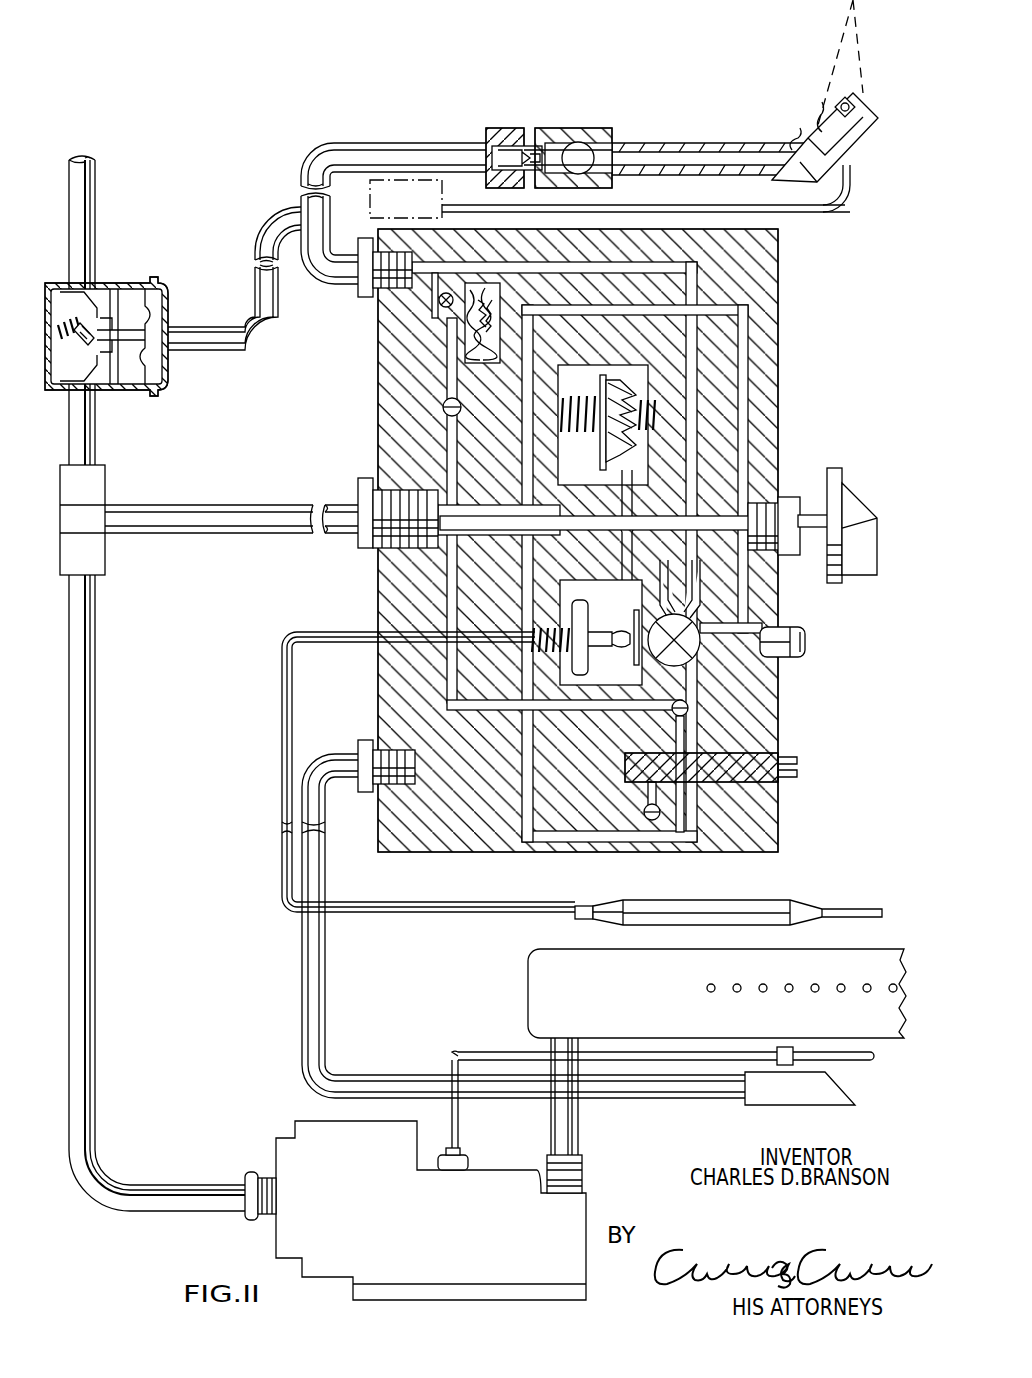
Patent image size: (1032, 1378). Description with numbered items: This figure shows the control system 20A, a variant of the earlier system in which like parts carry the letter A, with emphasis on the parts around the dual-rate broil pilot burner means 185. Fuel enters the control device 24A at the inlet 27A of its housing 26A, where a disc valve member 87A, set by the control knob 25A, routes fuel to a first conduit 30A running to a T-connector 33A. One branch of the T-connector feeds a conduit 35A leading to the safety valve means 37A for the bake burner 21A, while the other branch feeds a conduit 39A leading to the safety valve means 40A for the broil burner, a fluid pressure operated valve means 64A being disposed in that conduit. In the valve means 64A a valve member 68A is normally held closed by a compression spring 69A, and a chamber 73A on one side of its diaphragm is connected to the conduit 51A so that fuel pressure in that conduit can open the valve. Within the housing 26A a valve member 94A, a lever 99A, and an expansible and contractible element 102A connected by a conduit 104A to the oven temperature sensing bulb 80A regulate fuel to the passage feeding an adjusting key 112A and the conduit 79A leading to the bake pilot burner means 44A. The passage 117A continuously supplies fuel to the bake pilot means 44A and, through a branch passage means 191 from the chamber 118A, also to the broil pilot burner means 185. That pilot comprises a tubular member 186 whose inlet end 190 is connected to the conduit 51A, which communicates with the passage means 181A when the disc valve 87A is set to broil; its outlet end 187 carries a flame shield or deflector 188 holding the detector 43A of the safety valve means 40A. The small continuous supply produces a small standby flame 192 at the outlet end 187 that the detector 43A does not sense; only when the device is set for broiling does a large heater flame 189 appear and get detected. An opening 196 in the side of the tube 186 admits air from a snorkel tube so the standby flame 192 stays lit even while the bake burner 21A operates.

The control system 20A is at (504, 540).
The bake burner 21A is at (858, 954).
The control device 24A is at (485, 540).
The control knob 25A is at (848, 476).
The housing 26A is at (485, 540).
The inlet 27A is at (778, 660).
The first conduit 30A is at (245, 536).
The T-connector 33A is at (106, 556).
The conduit 35A is at (163, 683).
The safety valve means 37A is at (268, 1242).
The conduit 39A is at (100, 222).
The safety valve means 40A is at (395, 205).
The flame detector means 43A is at (852, 103).
The bake pilot burner means 44A is at (780, 1092).
The conduit 51A is at (404, 142).
The fluid pressure operated valve means 64A is at (133, 317).
The valve member 68A is at (100, 322).
The compression spring 69A is at (64, 304).
The chamber 73A is at (160, 322).
The conduit 79A is at (327, 980).
The oven temperature sensing bulb 80A is at (699, 900).
The disc valve member 87A is at (684, 664).
The valve member 94A is at (612, 440).
The lever 99A is at (620, 540).
The expansible and contractible element 102A is at (580, 650).
The conduit 104A is at (282, 698).
The adjusting key 112A is at (762, 758).
The passage 117A is at (750, 332).
The chamber 118A is at (502, 300).
The passage means 181A is at (698, 276).
The broil pilot burner means 185 is at (702, 106).
The tubular member 186 is at (700, 143).
The outlet end 187 is at (795, 144).
The flame shield means or deflector 188 is at (861, 135).
The large heater flame 189 is at (846, 30).
The inlet end 190 is at (520, 130).
The branch passage means 191 is at (372, 300).
The small standby flame 192 is at (818, 122).
The opening 196 is at (578, 128).